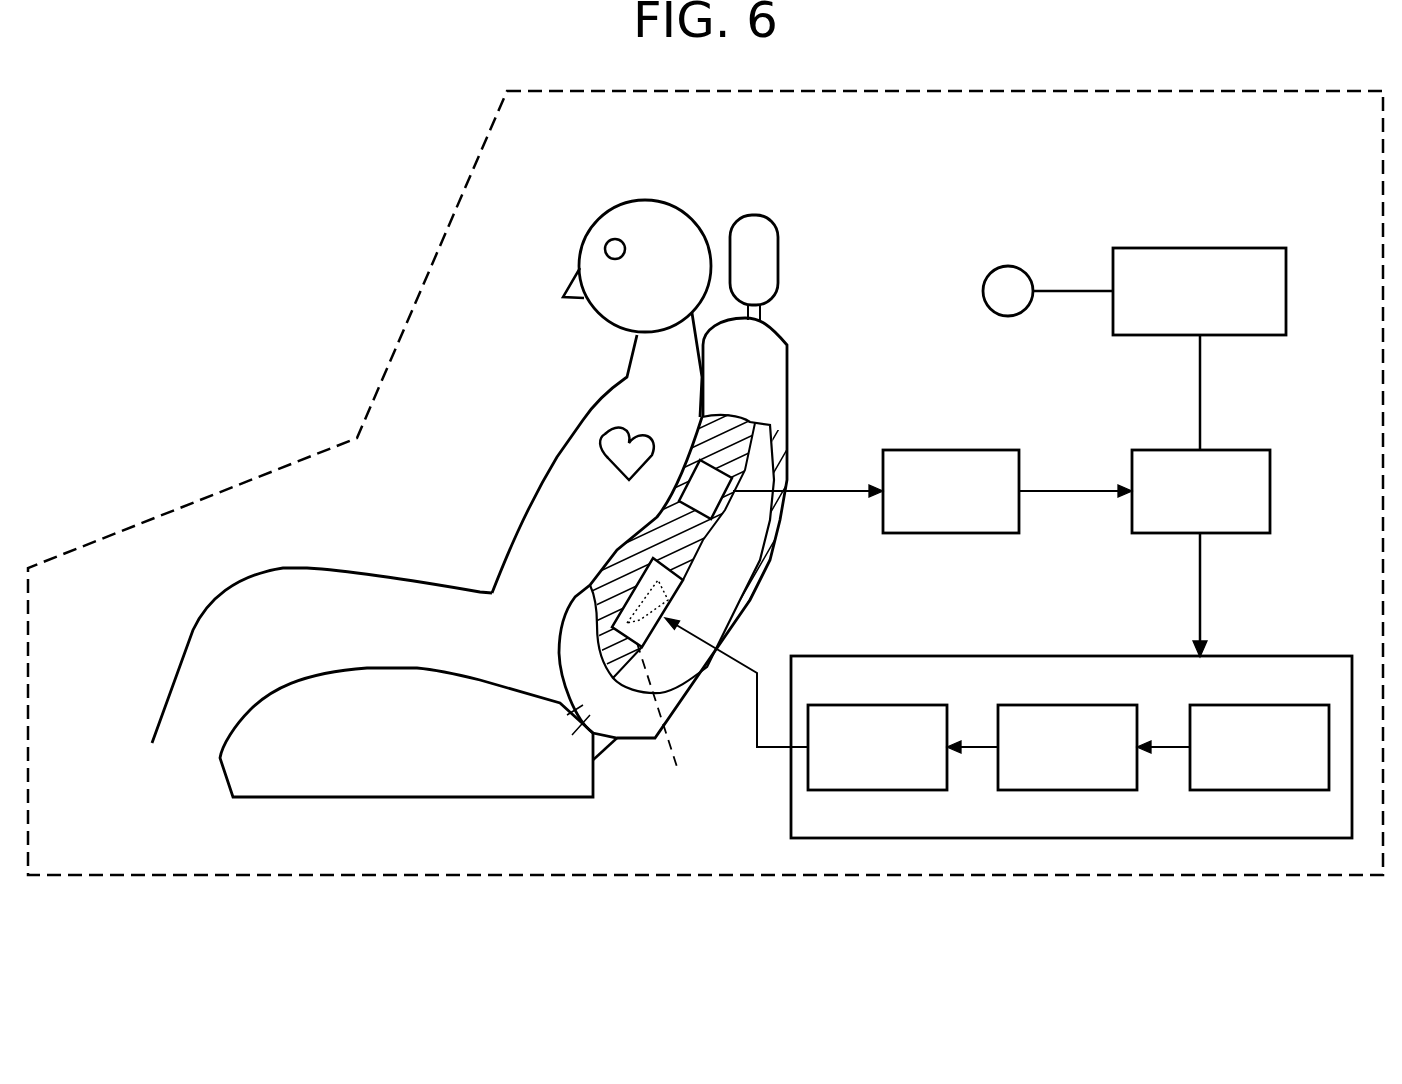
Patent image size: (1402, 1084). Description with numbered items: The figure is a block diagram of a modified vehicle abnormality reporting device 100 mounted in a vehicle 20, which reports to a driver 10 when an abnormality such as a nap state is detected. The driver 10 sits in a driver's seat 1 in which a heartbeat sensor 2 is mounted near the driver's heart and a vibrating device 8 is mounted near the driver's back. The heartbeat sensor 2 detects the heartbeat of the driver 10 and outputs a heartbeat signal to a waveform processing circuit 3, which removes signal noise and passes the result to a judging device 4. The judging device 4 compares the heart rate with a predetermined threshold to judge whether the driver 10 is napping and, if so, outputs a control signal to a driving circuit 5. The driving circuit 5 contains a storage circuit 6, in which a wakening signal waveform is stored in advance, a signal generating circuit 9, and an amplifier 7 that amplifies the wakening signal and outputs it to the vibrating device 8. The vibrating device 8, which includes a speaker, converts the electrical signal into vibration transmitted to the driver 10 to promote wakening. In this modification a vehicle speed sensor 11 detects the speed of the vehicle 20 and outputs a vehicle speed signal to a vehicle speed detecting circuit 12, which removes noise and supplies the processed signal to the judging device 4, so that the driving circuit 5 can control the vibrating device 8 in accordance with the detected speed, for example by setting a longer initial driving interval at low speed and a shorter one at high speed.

The driver's seat 1 is at (775, 381).
The heartbeat sensor 2 is at (692, 497).
The waveform processing circuit 3 is at (968, 450).
The judging device 4 is at (1240, 450).
The driving circuit 5 is at (1083, 655).
The storage circuit 6 is at (1277, 792).
The amplifier 7 is at (895, 792).
The vibrating device 8 is at (677, 588).
The signal generating circuit 9 is at (1085, 792).
The driver 10 is at (670, 205).
The vehicle speed sensor 11 is at (1010, 266).
The vehicle speed detecting circuit 12 is at (1218, 248).
The vehicle 20 is at (878, 90).
The vehicle abnormality reporting device 100 is at (1093, 188).